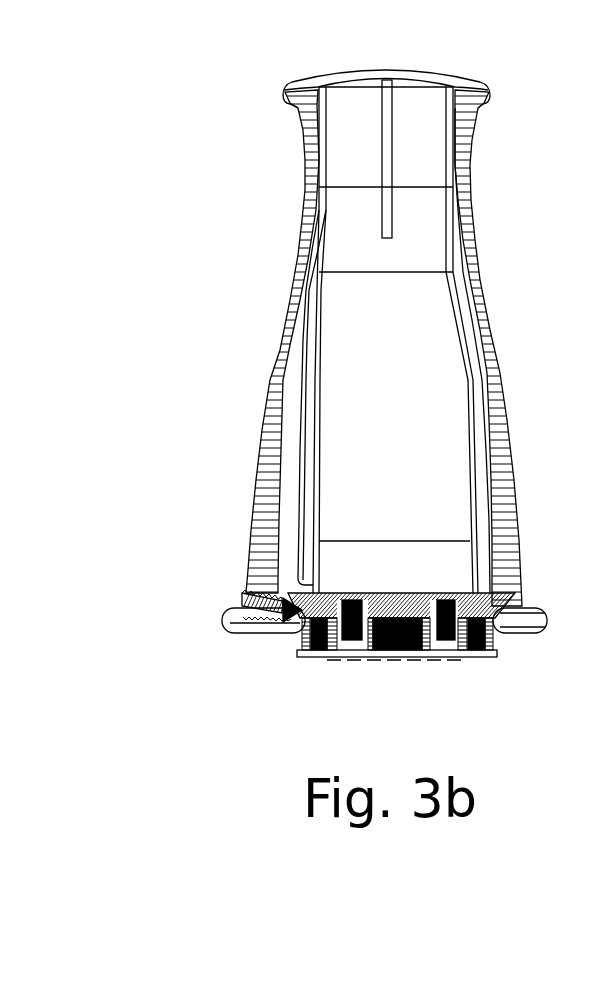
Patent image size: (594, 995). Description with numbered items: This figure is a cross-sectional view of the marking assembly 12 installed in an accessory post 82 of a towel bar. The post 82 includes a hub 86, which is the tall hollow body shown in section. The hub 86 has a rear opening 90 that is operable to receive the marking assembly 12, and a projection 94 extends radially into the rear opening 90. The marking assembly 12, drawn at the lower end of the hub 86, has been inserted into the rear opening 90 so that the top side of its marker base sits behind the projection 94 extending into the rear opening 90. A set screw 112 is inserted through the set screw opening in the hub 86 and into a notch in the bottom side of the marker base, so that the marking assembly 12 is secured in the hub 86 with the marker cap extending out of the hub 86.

The post 82 is at (317, 338).
The hub 86 is at (257, 487).
The set screw 112 is at (242, 594).
The rear opening 90 is at (295, 627).
The projection 94 is at (497, 640).
The marking assembly 12 is at (392, 672).